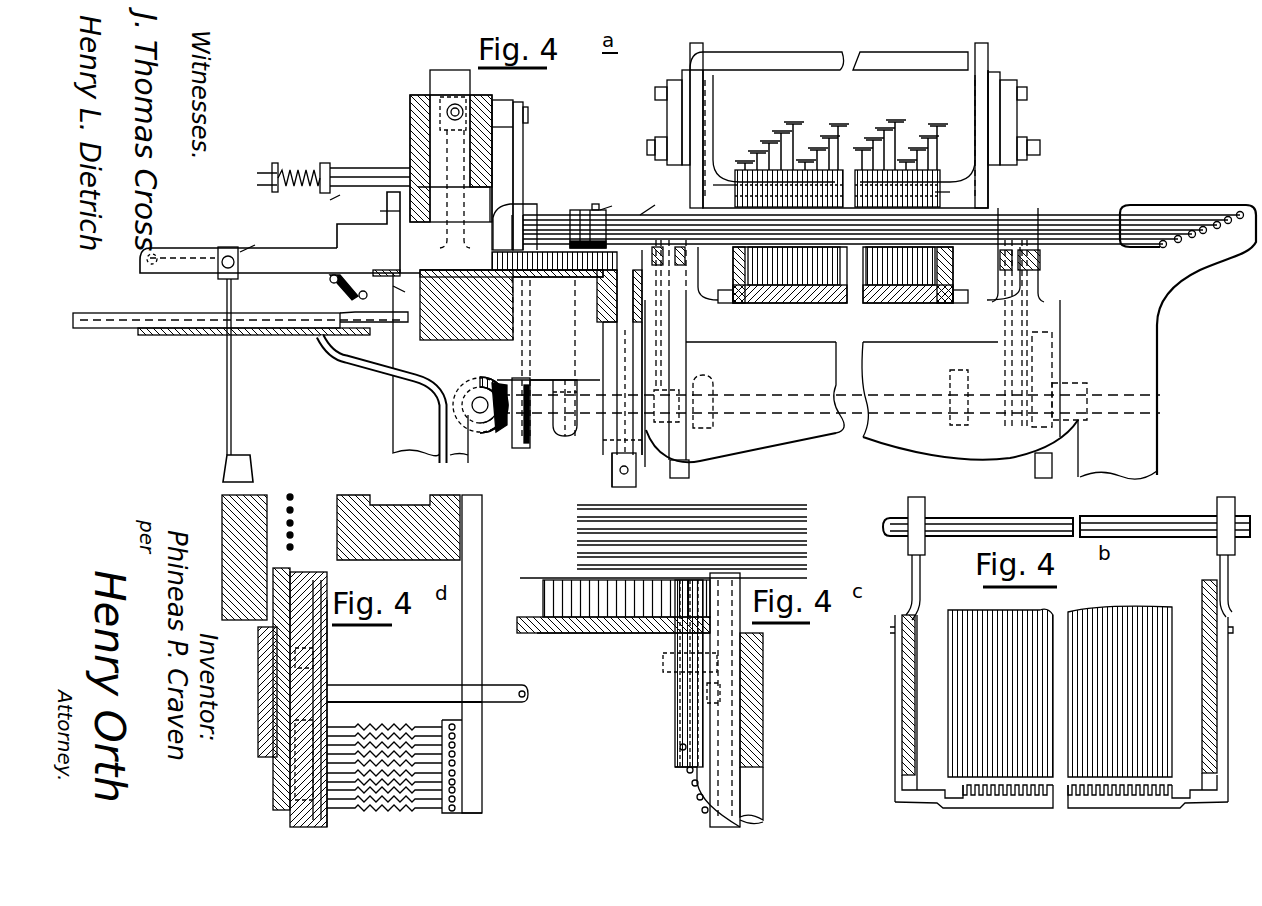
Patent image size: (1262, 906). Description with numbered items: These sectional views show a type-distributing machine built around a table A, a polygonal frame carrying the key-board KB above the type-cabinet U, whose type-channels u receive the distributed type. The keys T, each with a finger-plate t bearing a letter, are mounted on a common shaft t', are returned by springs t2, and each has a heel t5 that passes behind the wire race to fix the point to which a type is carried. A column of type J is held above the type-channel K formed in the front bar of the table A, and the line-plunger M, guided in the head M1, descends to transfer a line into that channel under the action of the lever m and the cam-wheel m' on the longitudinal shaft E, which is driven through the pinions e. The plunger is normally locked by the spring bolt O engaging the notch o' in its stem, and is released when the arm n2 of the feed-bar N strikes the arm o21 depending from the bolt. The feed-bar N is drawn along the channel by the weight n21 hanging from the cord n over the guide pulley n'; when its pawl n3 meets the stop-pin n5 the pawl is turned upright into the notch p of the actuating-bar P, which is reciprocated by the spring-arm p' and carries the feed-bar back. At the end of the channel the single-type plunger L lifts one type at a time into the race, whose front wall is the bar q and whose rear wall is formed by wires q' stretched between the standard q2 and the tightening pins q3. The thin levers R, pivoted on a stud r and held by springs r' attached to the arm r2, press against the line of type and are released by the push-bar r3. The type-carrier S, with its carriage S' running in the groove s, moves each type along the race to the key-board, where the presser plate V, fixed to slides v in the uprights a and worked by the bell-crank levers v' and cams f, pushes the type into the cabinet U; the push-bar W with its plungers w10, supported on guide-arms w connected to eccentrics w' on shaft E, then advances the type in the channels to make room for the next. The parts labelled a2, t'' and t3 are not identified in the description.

In FIG. 4A, the table A is at (698, 335).
In FIG. 4D, the table A is at (290, 818).
In FIG. 4A, the line-plunger M is at (412, 88).
In FIG. 4A, the standard or head M1 is at (415, 117).
In FIG. 4A, the notch o' is at (453, 172).
In FIG. 4A, the locking-bolt O is at (295, 175).
In FIG. 4A, the arm o21 is at (320, 207).
In FIG. 4A, the arm n2 is at (375, 207).
In FIG. 4A, the lever m is at (520, 175).
In FIG. 4A, the feed-bar N is at (185, 235).
In FIG. 4A, the cord n is at (238, 336).
In FIG. 4A, the guide pulley n' is at (256, 239).
In FIG. 4A, the weight n21 is at (252, 468).
In FIG. 4A, the pawl n3 is at (357, 287).
In FIG. 4A, the stop-pin n5 is at (404, 296).
In FIG. 4A, the actuating-bar P is at (262, 316).
In FIG. 4A, the notch p is at (254, 342).
In FIG. 4A, the spring-arm p' is at (381, 399).
In FIG. 4A, the pinions e is at (480, 414).
In FIG. 4A, the pawl a2 is at (500, 432).
In FIG. 4A, the cam-wheel m' is at (530, 422).
In FIG. 4A, the spring t2 is at (580, 430).
In FIG. 4A, the type-channel K is at (530, 296).
In FIG. 4D, the type-channel K is at (288, 540).
In FIG. 4A, the column of type J is at (597, 312).
In FIG. 4C, the column of type J is at (662, 605).
In FIG. 4A, the strip t'' is at (629, 352).
In FIG. 4A, the single-type plunger L is at (622, 404).
In FIG. 4D, the single-type plunger L is at (258, 778).
In FIG. 4C, the single-type plunger L is at (736, 700).
In FIG. 4A, the shaft t' is at (593, 471).
In FIG. 4A, the standard q2 is at (560, 212).
In FIG. 4A, the tightening pins q3 is at (1202, 239).
In FIG. 4A, the type-carrier S is at (588, 209).
In FIG. 4A, the carriage S' is at (614, 201).
In FIG. 4A, the wires q' is at (645, 205).
In FIG. 4D, the wires q' is at (303, 514).
In FIG. 4C, the wires q' is at (707, 537).
In FIG. 4A, the slides v is at (871, 244).
In FIG. 4A, the bell-crank levers v' is at (836, 117).
In FIG. 4A, the uprights or standards a is at (1000, 72).
In FIG. 4B, the uprights or standards a is at (1202, 693).
In FIG. 4A, the key-board KB is at (839, 130).
In FIG. 4A, the cover plate t3 is at (928, 52).
In FIG. 4A, the finger-plate t is at (841, 148).
In FIG. 4A, the keys T is at (951, 141).
In FIG. 4A, the presser plate V is at (723, 189).
In FIG. 4A, the foot or heel t5 is at (950, 189).
In FIG. 4A, the longitudinal shaft E is at (798, 402).
In FIG. 4B, the longitudinal shaft E is at (1048, 518).
In FIG. 4A, the cams f is at (689, 470).
In FIG. 4A, the type-channels u is at (843, 275).
In FIG. 4B, the type-channels u is at (1060, 691).
In FIG. 4A, the type-cabinet U is at (859, 288).
In FIG. 4B, the type-cabinet U is at (1148, 605).
In FIG. 4A, the guide-arms w is at (846, 257).
In FIG. 4B, the guide-arms w is at (1056, 691).
In FIG. 4A, the eccentrics w' is at (829, 393).
In FIG. 4B, the eccentrics w' is at (1082, 554).
In FIG. 4D, the bar q is at (226, 554).
In FIG. 4D, the groove s is at (398, 517).
In FIG. 4D, the arm r2 is at (470, 755).
In FIG. 4D, the thin levers R is at (312, 640).
In FIG. 4C, the thin levers R is at (675, 683).
In FIG. 4D, the push-bar r3 is at (392, 685).
In FIG. 4C, the push-bar r3 is at (721, 692).
In FIG. 4D, the spring r' is at (384, 757).
In FIG. 4C, the spring r' is at (657, 761).
In FIG. 4C, the stud r is at (671, 660).
In FIG. 4B, the push-bar W is at (895, 800).
In FIG. 4B, the plungers w10 is at (965, 795).